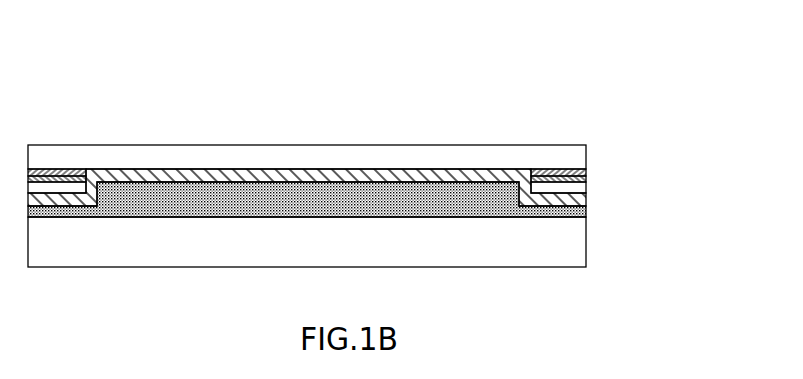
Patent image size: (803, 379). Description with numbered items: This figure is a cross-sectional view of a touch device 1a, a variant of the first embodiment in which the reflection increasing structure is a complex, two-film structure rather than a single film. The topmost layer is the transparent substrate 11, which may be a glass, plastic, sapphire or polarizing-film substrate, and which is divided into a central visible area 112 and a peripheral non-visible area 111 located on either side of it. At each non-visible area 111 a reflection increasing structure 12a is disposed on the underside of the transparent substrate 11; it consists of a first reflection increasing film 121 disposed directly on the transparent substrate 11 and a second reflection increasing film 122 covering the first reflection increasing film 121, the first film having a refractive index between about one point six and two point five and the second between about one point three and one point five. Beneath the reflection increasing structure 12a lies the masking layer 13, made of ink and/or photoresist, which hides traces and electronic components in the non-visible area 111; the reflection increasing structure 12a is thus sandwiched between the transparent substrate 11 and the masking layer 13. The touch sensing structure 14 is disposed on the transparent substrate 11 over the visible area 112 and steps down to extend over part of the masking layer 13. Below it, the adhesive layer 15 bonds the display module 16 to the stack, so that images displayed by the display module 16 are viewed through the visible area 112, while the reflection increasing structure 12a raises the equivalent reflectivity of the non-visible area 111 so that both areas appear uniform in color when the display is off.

The touch device 1a is at (137, 72).
The transparent substrate 11 is at (583, 160).
The reflection increasing structure 12a is at (356, 165).
The first reflection increasing film 121 is at (583, 172).
The second reflection increasing film 122 is at (586, 179).
The masking layer 13 is at (586, 188).
The touch sensing structure 14 is at (586, 198).
The adhesive layer 15 is at (586, 209).
The display module 16 is at (578, 253).
The non-visible area 111 is at (86, 169).
The visible area 112 is at (531, 116).